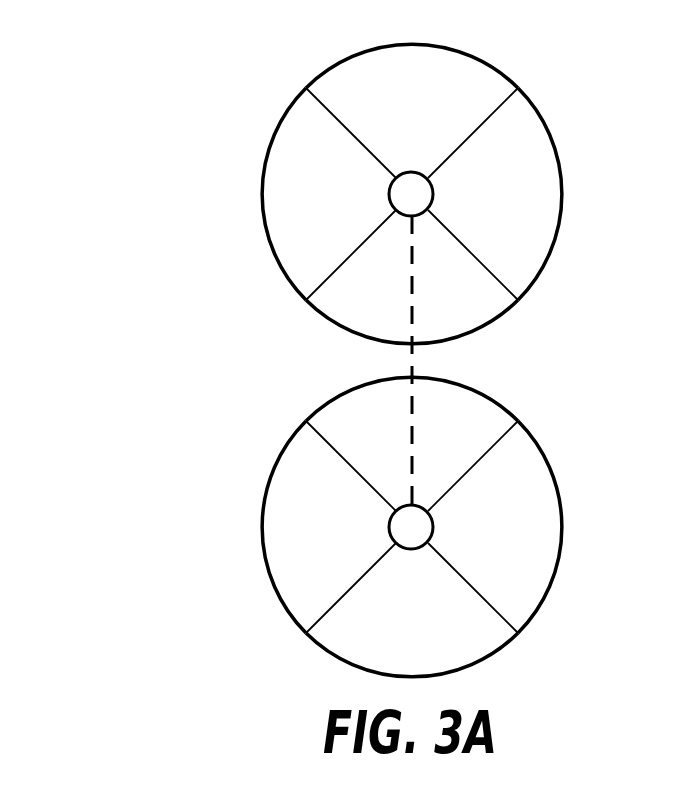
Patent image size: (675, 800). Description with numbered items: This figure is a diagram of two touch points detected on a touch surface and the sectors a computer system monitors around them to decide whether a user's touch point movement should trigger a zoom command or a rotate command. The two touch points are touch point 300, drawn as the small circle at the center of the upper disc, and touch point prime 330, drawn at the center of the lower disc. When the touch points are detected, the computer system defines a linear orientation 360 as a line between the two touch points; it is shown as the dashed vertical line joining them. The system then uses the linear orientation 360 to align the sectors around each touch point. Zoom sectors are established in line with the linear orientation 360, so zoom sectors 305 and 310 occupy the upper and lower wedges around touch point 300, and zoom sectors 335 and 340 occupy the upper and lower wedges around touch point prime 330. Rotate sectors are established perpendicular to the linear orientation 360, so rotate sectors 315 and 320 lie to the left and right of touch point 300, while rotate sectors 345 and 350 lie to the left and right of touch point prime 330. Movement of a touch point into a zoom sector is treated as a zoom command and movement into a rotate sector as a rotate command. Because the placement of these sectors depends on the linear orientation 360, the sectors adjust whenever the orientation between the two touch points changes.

The touch point 300 is at (410, 193).
The zoom sector 305 is at (483, 63).
The zoom sector 310 is at (475, 332).
The rotate sector 315 is at (262, 188).
The rotate sector 320 is at (562, 193).
The touch point prime 330 is at (410, 528).
The zoom sector 335 is at (483, 397).
The zoom sector 340 is at (478, 662).
The rotate sector 345 is at (262, 520).
The rotate sector 350 is at (562, 524).
The linear orientation 360 is at (408, 360).